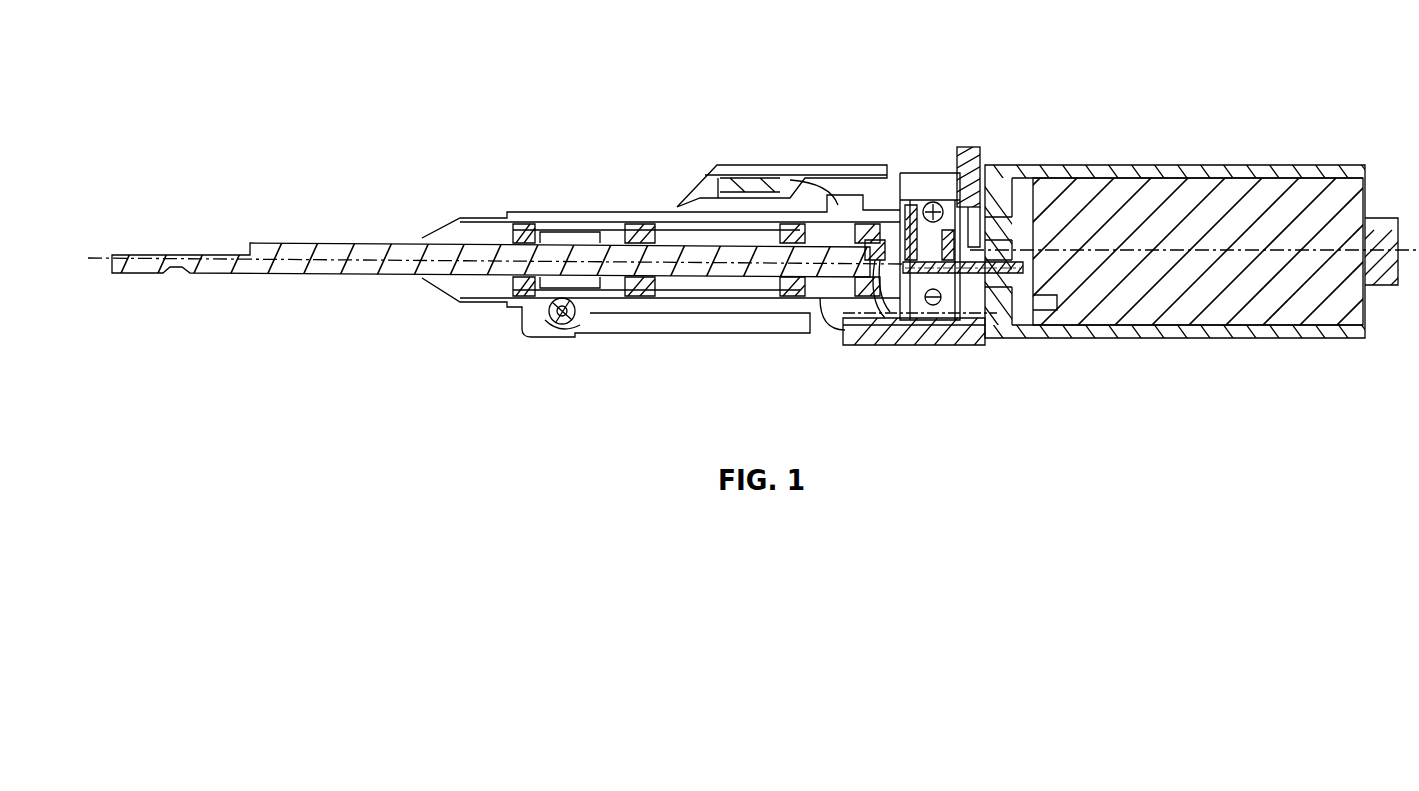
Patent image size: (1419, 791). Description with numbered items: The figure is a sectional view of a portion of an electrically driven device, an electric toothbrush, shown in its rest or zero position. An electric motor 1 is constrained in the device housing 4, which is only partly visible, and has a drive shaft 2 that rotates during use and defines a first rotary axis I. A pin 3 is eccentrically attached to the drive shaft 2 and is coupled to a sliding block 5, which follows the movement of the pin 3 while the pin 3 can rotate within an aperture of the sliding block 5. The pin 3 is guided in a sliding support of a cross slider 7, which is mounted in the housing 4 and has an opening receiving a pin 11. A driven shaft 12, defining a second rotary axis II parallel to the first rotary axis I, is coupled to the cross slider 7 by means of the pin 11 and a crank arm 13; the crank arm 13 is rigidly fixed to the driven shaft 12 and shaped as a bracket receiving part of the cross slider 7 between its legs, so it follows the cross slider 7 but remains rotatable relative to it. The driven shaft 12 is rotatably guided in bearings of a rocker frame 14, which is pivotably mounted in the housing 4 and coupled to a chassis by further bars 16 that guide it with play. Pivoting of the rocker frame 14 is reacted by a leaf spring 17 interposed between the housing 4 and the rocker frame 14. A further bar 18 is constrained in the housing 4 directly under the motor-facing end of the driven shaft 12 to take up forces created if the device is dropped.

The electric motor 1 is at (1307, 305).
The drive shaft 2 is at (995, 240).
The pin 3 is at (998, 285).
The device housing 4 is at (1167, 333).
The sliding block 5 is at (905, 245).
The cross slider 7 is at (928, 305).
The pin 11 is at (897, 345).
The driven shaft 12 is at (375, 250).
The crank arm 13 is at (835, 340).
The rocker frame 14 is at (460, 230).
The bar 16 is at (558, 322).
The leaf spring 17 is at (765, 167).
The bar 18 is at (880, 275).
The first rotary axis I is at (1140, 240).
The second rotary axis II is at (333, 262).